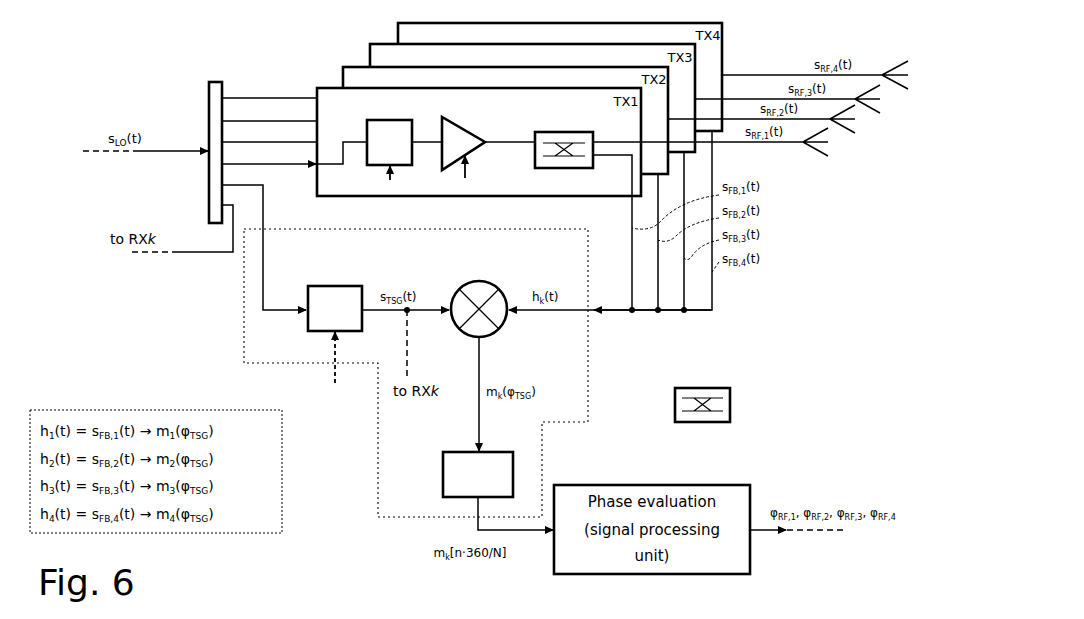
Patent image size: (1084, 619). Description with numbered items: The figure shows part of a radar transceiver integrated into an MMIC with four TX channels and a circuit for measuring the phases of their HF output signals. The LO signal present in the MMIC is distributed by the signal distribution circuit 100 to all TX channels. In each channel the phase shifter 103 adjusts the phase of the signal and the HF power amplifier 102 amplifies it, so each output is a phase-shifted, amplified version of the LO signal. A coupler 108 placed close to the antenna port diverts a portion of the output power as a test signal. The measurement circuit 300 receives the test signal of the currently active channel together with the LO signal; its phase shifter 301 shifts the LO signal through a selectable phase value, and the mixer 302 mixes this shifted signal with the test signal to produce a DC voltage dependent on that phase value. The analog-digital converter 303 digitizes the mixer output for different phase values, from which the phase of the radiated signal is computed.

The signal distribution circuit 100 is at (218, 79).
The HF power amplifier 102 is at (472, 127).
The phase shifter 103 is at (413, 127).
The coupler 108 is at (556, 129).
The measurement circuit 300 is at (243, 312).
The phase shifter 301 is at (347, 283).
The mixer 302 is at (498, 284).
The analog-digital converter 303 is at (440, 468).